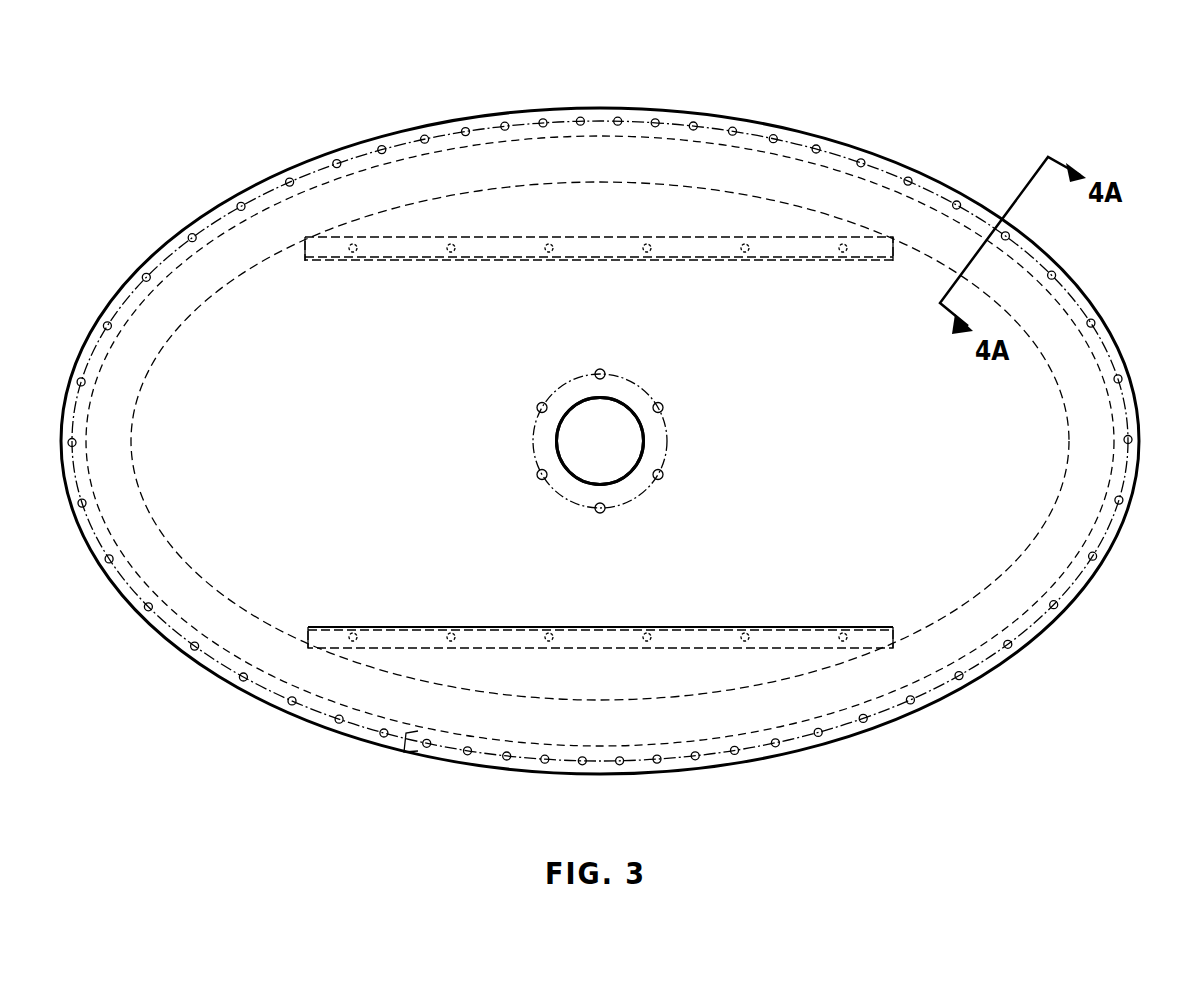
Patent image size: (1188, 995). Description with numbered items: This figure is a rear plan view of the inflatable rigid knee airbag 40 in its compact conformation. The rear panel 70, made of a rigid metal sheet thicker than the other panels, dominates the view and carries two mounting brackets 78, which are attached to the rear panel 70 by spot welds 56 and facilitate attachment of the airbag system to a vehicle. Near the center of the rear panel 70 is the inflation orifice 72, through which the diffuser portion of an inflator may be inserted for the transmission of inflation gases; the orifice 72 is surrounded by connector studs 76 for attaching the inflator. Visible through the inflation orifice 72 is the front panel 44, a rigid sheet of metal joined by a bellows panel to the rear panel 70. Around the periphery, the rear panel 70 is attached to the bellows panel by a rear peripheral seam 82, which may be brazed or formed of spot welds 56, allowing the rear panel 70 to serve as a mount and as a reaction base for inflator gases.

The inflatable rigid knee airbag 40 is at (882, 132).
The front panel 44 is at (605, 422).
The spot welds 56 is at (506, 123).
The rear panel 70 is at (415, 175).
The inflation orifice 72 is at (638, 444).
The connector studs 76 is at (604, 512).
The mounting brackets 78 is at (698, 641).
The rear peripheral seam 82 is at (404, 752).